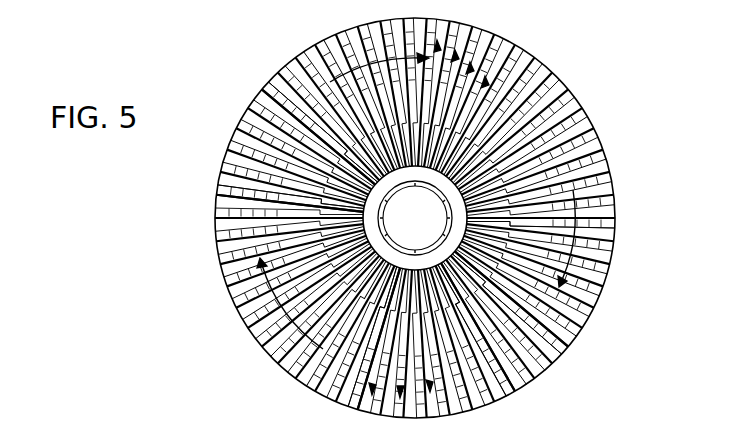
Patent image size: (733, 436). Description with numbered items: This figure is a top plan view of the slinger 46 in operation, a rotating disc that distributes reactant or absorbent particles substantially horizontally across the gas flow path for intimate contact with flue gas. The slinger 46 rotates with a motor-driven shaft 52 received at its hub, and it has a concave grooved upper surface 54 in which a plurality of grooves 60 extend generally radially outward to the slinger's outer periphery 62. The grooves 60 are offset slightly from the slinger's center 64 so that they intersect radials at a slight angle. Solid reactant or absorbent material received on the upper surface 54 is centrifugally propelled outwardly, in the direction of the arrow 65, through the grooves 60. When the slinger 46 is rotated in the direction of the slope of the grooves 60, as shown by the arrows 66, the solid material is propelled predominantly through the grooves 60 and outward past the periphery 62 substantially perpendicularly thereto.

The slinger 46 is at (576, 68).
The shaft 52 is at (405, 204).
The concave grooved upper surface 54 is at (573, 102).
The grooves 60 is at (500, 53).
The outer periphery 62 is at (603, 143).
The slinger's center 64 is at (417, 220).
The arrow 65 is at (450, 73).
The arrows 66 is at (356, 46).